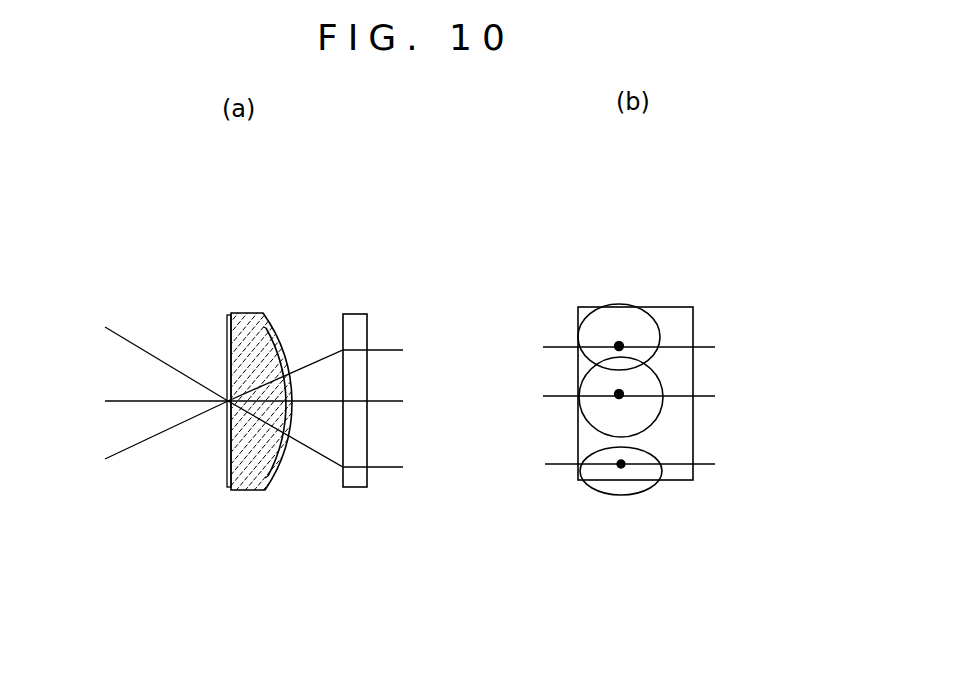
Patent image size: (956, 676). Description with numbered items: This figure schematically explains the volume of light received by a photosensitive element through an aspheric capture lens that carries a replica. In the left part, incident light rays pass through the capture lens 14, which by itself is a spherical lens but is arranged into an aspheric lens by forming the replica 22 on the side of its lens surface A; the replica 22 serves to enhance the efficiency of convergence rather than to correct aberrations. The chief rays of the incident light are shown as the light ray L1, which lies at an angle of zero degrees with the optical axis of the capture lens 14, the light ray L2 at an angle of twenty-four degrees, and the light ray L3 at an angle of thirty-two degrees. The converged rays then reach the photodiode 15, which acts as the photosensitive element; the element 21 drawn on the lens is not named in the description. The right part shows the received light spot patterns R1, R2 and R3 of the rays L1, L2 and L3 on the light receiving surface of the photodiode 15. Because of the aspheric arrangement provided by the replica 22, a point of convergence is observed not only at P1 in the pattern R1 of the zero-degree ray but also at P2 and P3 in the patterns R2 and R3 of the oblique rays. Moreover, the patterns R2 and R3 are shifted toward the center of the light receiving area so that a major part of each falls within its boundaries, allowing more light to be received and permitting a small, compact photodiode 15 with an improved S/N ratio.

The capture lens 14 is at (247, 327).
The photodiode 15 is at (352, 315).
The first surface plate of lens 21 is at (225, 448).
The replica 22 is at (273, 473).
The chief ray L1 is at (235, 402).
The chief ray L2 is at (235, 413).
The chief ray L3 is at (235, 389).
The point of convergence P1 is at (619, 394).
The point of convergence P2 is at (619, 345).
The point of convergence P3 is at (621, 464).
The received light pattern R1 is at (663, 378).
The received light pattern R2 is at (657, 320).
The received light pattern R3 is at (600, 493).